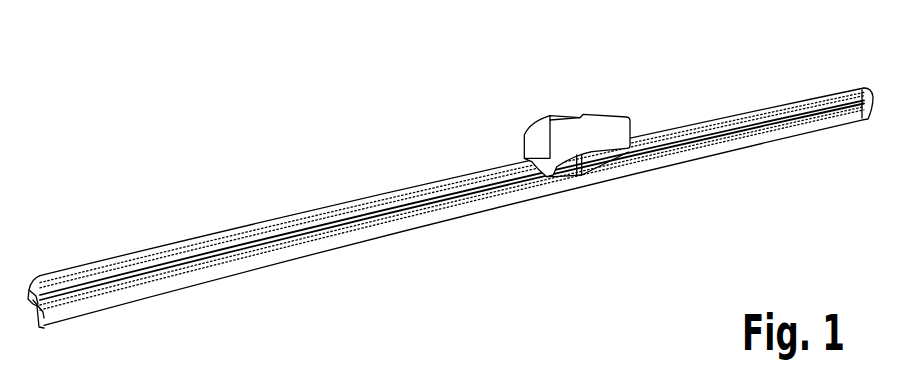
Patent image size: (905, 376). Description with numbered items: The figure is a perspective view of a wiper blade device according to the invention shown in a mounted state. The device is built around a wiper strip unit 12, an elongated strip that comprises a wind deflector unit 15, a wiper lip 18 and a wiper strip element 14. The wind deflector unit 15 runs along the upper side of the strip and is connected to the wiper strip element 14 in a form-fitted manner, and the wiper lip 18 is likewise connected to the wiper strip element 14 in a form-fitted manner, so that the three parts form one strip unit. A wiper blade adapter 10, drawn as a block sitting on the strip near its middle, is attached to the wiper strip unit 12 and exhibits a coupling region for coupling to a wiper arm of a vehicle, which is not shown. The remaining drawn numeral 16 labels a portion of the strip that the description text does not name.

The wiper blade adapter 10 is at (513, 107).
The wiper strip unit 12 is at (340, 174).
The wiper strip element 14 is at (495, 210).
The wind deflector unit 15 is at (690, 112).
The spoiler 16 is at (193, 247).
The wiper lip 18 is at (385, 228).